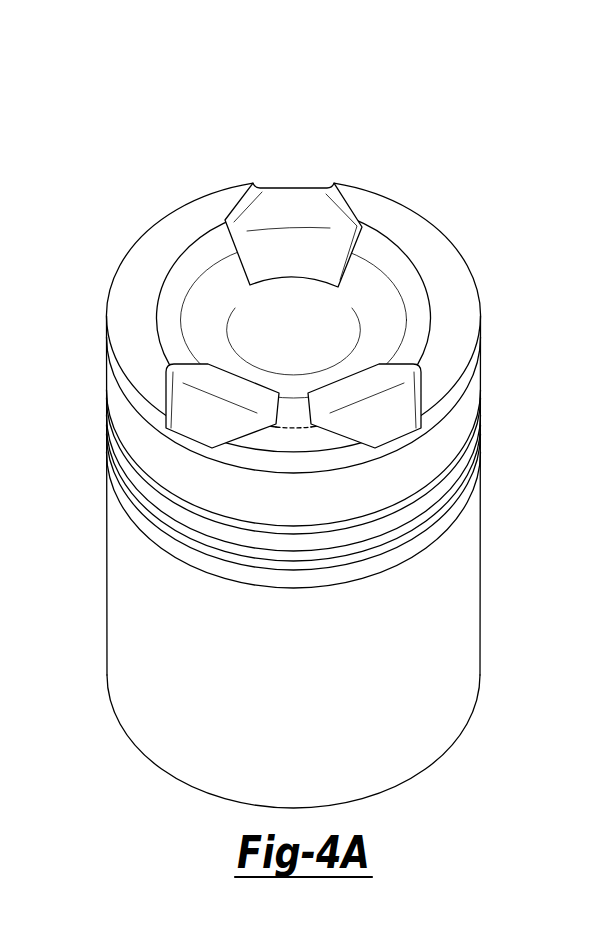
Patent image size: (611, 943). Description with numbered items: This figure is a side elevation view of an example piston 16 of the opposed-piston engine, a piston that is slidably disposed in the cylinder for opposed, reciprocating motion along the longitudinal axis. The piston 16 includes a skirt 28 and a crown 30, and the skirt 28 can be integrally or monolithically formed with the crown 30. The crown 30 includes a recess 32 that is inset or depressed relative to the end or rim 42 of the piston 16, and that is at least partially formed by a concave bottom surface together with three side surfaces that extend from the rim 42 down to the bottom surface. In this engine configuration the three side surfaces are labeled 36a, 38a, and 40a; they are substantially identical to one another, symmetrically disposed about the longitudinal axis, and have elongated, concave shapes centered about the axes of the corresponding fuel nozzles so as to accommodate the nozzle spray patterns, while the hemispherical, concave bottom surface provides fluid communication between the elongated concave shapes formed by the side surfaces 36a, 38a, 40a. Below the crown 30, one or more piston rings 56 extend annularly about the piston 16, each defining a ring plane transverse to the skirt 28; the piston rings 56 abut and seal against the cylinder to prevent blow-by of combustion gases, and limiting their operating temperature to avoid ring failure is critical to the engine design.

The piston 16 is at (305, 456).
The skirt 28 is at (118, 631).
The crown 30 is at (170, 260).
The recess 32 is at (375, 247).
The lug 36a is at (292, 218).
The lug 38a is at (405, 410).
The lug 40a is at (187, 413).
The rim 42 is at (480, 257).
The piston rings 56 is at (470, 455).